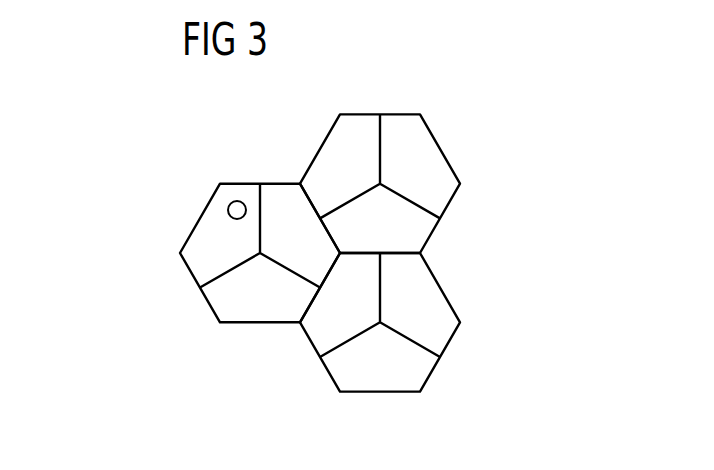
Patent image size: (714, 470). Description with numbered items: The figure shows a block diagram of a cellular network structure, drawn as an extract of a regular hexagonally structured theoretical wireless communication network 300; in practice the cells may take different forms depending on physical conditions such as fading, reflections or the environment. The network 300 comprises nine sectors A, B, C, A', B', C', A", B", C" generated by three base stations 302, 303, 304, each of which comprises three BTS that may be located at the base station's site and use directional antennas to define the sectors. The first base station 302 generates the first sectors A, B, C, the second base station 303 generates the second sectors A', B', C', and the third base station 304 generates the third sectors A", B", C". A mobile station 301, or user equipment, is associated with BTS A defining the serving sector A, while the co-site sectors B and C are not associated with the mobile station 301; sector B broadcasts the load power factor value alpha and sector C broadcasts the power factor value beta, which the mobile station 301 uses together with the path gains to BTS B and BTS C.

The network 300 is at (346, 209).
The mobile station 301 is at (238, 200).
The base station 302 is at (258, 256).
The second base station 303 is at (382, 184).
The third base station 304 is at (383, 322).